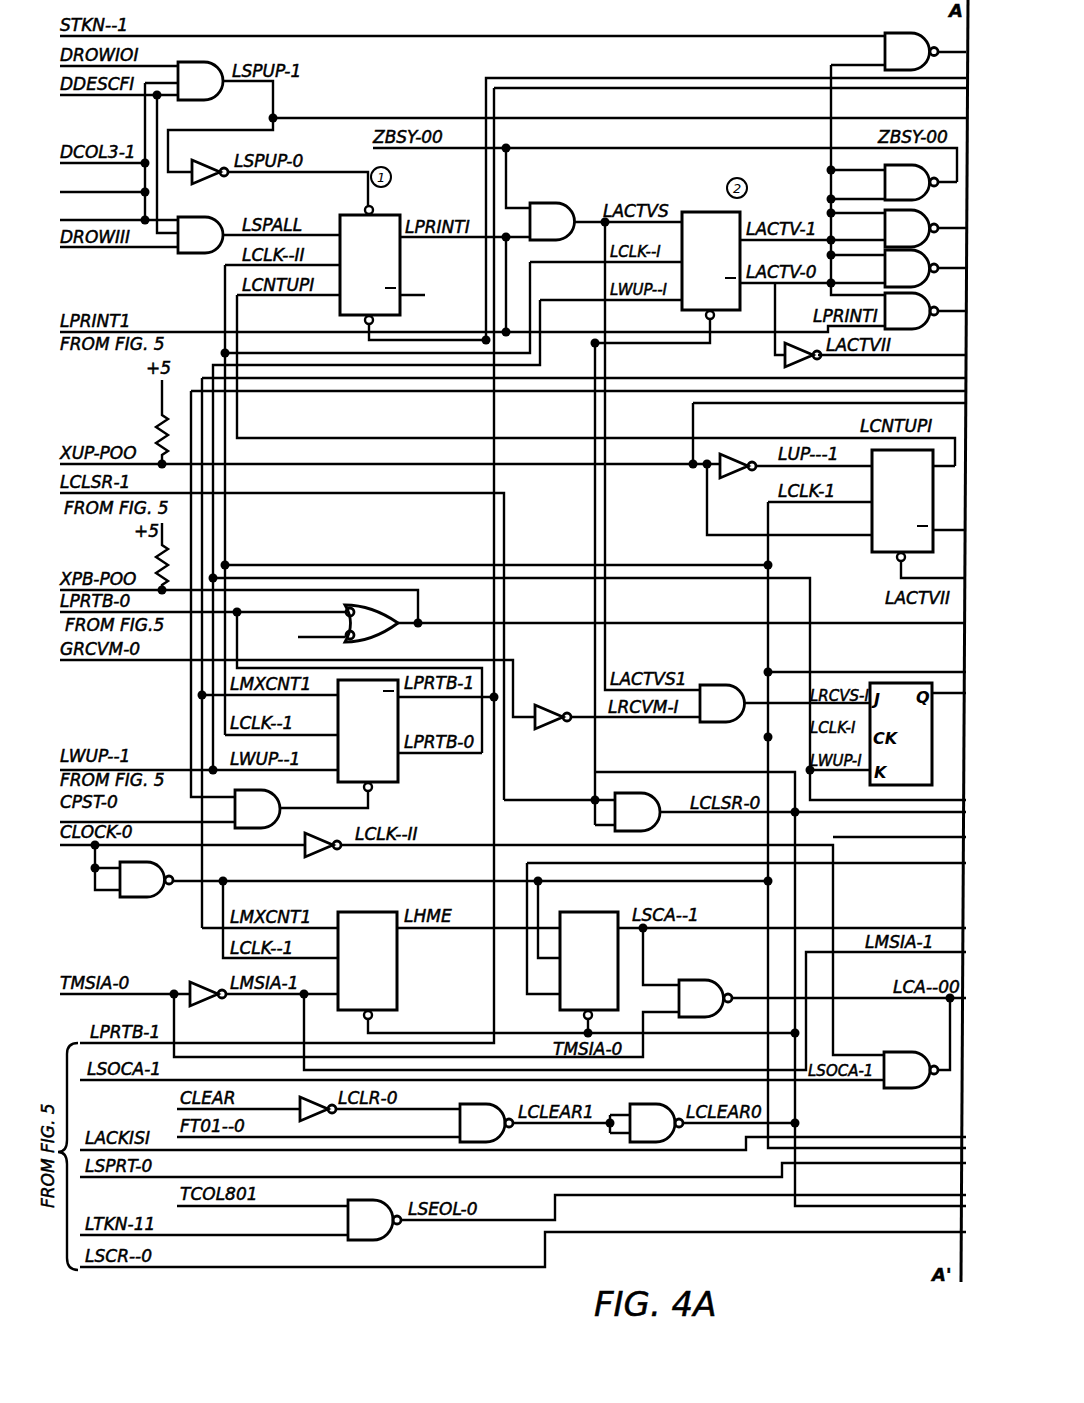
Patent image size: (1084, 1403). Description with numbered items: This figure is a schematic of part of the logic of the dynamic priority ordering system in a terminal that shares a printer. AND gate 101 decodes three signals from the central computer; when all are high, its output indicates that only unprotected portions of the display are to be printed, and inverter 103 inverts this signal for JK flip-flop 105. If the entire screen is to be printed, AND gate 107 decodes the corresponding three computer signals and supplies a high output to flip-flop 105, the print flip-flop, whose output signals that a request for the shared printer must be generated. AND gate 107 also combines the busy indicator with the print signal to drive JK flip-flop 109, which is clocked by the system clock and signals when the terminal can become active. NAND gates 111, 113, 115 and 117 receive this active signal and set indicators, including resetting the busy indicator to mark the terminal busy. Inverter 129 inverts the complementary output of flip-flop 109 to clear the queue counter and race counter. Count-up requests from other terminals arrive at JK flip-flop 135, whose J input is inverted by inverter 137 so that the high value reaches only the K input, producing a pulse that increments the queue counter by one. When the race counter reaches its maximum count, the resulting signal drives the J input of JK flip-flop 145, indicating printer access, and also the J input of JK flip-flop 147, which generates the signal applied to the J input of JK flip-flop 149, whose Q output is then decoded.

The AND gate 101 is at (196, 44).
The inverter 103 is at (204, 179).
The JK flip-flop 105 is at (401, 215).
The AND gate 107 is at (184, 256).
The JK flip-flop 109 is at (706, 212).
The NAND gate 111 is at (932, 185).
The NAND gate 113 is at (932, 232).
The NAND gate 115 is at (932, 272).
The NAND gate 117 is at (932, 315).
The inverter 129 is at (787, 361).
The JK flip-flop 135 is at (872, 522).
The inverter 137 is at (731, 471).
The JK flip-flop 145 is at (398, 782).
The JK flip-flop 147 is at (397, 973).
The JK flip-flop 149 is at (560, 1009).